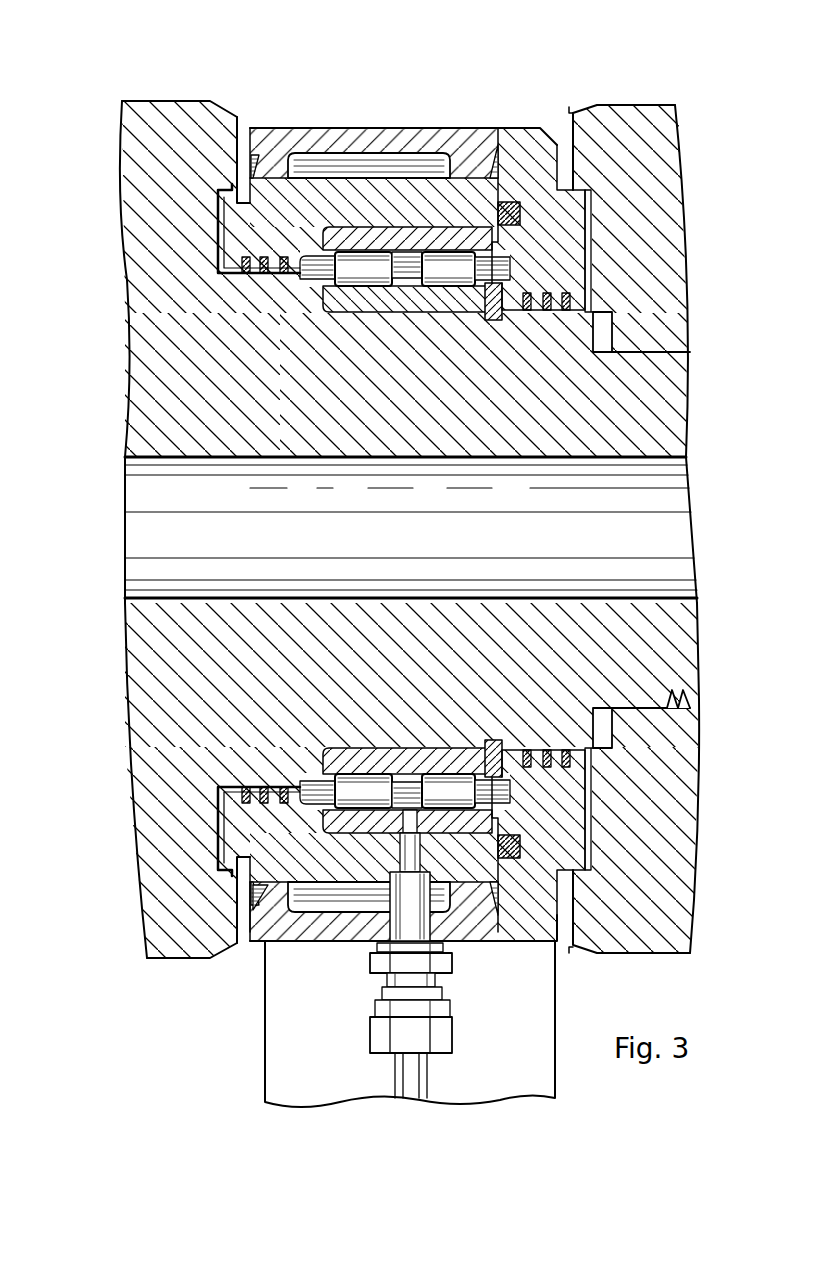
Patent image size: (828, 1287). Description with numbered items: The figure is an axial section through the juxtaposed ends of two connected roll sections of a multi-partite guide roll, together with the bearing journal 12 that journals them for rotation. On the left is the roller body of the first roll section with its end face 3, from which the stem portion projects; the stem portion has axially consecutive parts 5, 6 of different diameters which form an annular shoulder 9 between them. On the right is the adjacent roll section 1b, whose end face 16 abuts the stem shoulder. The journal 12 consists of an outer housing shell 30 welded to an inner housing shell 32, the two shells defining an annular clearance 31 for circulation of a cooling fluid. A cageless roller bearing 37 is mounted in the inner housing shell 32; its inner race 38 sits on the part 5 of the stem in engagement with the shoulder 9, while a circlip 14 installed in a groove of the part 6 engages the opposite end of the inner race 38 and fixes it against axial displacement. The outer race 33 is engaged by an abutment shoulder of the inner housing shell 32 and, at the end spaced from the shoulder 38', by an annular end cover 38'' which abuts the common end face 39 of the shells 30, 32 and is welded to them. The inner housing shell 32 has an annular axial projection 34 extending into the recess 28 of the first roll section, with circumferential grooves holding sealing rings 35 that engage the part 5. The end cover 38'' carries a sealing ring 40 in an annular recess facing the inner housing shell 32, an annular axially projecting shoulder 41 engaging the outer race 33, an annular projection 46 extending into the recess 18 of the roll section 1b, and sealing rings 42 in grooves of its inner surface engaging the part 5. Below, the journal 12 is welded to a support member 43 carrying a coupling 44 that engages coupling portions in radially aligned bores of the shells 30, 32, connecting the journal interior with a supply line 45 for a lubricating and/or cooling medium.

The roll section 1b is at (688, 102).
The end face 3 is at (246, 125).
The part of the stem portion 5 is at (306, 288).
The part of the stem portion 6 is at (447, 314).
The annular shoulder 9 is at (352, 300).
The journal 12 is at (365, 130).
The circlip 14 is at (497, 322).
The end face 16 is at (575, 107).
The recess 18 is at (586, 288).
The recess 28 is at (218, 198).
The outer housing shell 30 is at (436, 142).
The annular clearance 31 is at (298, 152).
The inner housing shell 32 is at (266, 178).
The outer race 33 is at (454, 236).
The annular axial projection 34 is at (232, 237).
The sealing rings 35 is at (246, 274).
The roller bearing 37 is at (407, 245).
The inner race 38 is at (363, 274).
The shoulder 38' is at (404, 167).
The annular end cover 38'' is at (538, 191).
The common end face 39 is at (497, 170).
The sealing ring 40 is at (522, 218).
The annular axially projecting shoulder 41 is at (493, 243).
The sealing rings 42 is at (527, 311).
The support member 43 is at (513, 1072).
The coupling 44 is at (415, 1042).
The supply line 45 is at (403, 1083).
The annular projection 46 is at (590, 196).